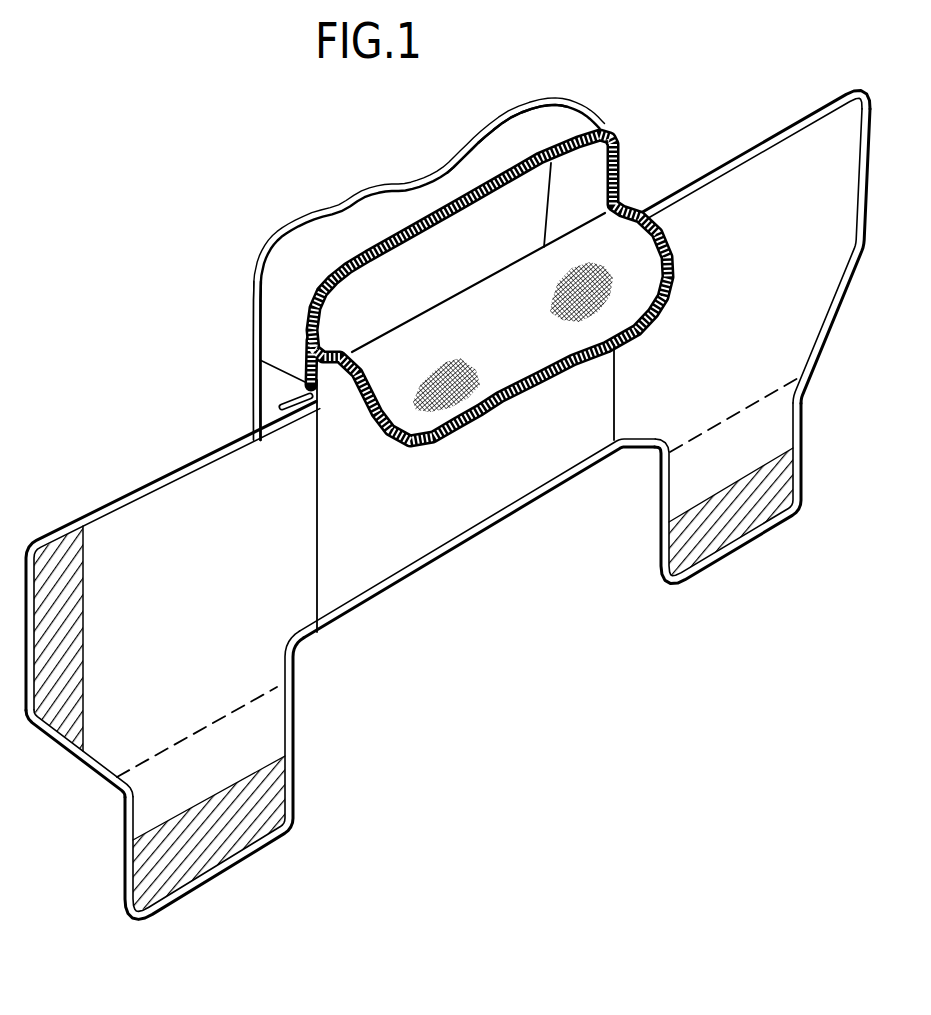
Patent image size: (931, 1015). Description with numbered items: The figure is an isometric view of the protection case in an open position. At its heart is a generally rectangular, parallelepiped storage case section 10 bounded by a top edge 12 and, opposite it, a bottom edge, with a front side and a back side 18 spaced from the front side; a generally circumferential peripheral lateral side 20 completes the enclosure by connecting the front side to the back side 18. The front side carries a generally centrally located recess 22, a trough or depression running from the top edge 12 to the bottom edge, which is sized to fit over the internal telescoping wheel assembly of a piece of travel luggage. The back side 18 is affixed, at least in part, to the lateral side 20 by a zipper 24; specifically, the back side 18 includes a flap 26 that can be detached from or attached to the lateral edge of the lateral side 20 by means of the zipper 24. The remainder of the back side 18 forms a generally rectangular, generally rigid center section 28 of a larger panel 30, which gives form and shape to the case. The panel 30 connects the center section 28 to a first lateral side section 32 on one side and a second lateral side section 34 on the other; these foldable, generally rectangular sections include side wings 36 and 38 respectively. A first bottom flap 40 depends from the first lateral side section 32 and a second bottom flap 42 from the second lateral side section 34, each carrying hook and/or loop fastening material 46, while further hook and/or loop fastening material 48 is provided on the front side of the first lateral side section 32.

The storage case section 10 is at (441, 338).
The top edge 12 is at (393, 255).
The back side 18 is at (506, 281).
The lateral side 20 is at (283, 308).
The recess 22 is at (430, 175).
The zipper 24 is at (393, 232).
The flap 26 is at (507, 327).
The center section 28 is at (497, 480).
The panel 30 is at (448, 482).
The first lateral side section 32 is at (194, 660).
The second lateral side section 34 is at (731, 346).
The side wing 36 is at (60, 705).
The side wing 38 is at (847, 170).
The first bottom flap 40 is at (263, 738).
The second bottom flap 42 is at (687, 487).
The hook and/or loop fastening material 46 is at (265, 803).
The hook and/or loop fastening material 48 is at (56, 565).